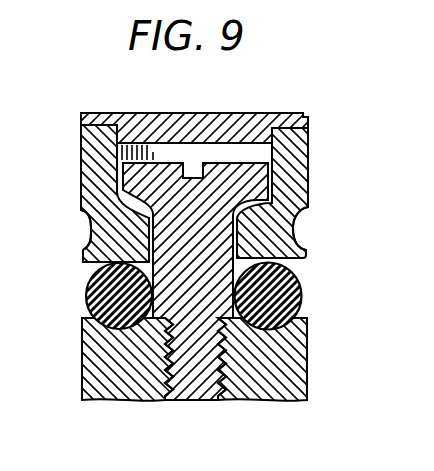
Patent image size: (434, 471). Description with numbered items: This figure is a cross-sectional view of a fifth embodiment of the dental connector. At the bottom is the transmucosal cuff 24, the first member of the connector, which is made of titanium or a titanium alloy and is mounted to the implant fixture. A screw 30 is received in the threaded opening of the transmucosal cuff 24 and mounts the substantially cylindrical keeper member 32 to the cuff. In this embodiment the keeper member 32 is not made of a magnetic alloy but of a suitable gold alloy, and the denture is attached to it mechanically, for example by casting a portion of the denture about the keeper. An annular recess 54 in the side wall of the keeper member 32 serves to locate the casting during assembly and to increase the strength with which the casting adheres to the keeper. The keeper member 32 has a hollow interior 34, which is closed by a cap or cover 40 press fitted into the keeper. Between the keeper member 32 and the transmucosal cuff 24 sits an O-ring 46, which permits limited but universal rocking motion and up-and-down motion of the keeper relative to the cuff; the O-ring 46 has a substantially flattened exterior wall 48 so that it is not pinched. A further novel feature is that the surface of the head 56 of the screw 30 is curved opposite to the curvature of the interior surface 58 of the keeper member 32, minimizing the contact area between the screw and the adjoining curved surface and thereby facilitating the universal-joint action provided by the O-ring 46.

The transmucosal cuff 24 is at (308, 373).
The screw 30 is at (265, 177).
The keeper member 32 is at (292, 207).
The hollow interior 34 is at (214, 150).
The cap or cover 40 is at (300, 115).
The O-ring 46 is at (303, 298).
The flattened exterior wall 48 is at (88, 298).
The annular recess 54 is at (306, 250).
The head of the screw 56 is at (170, 140).
The interior surface 58 is at (87, 218).